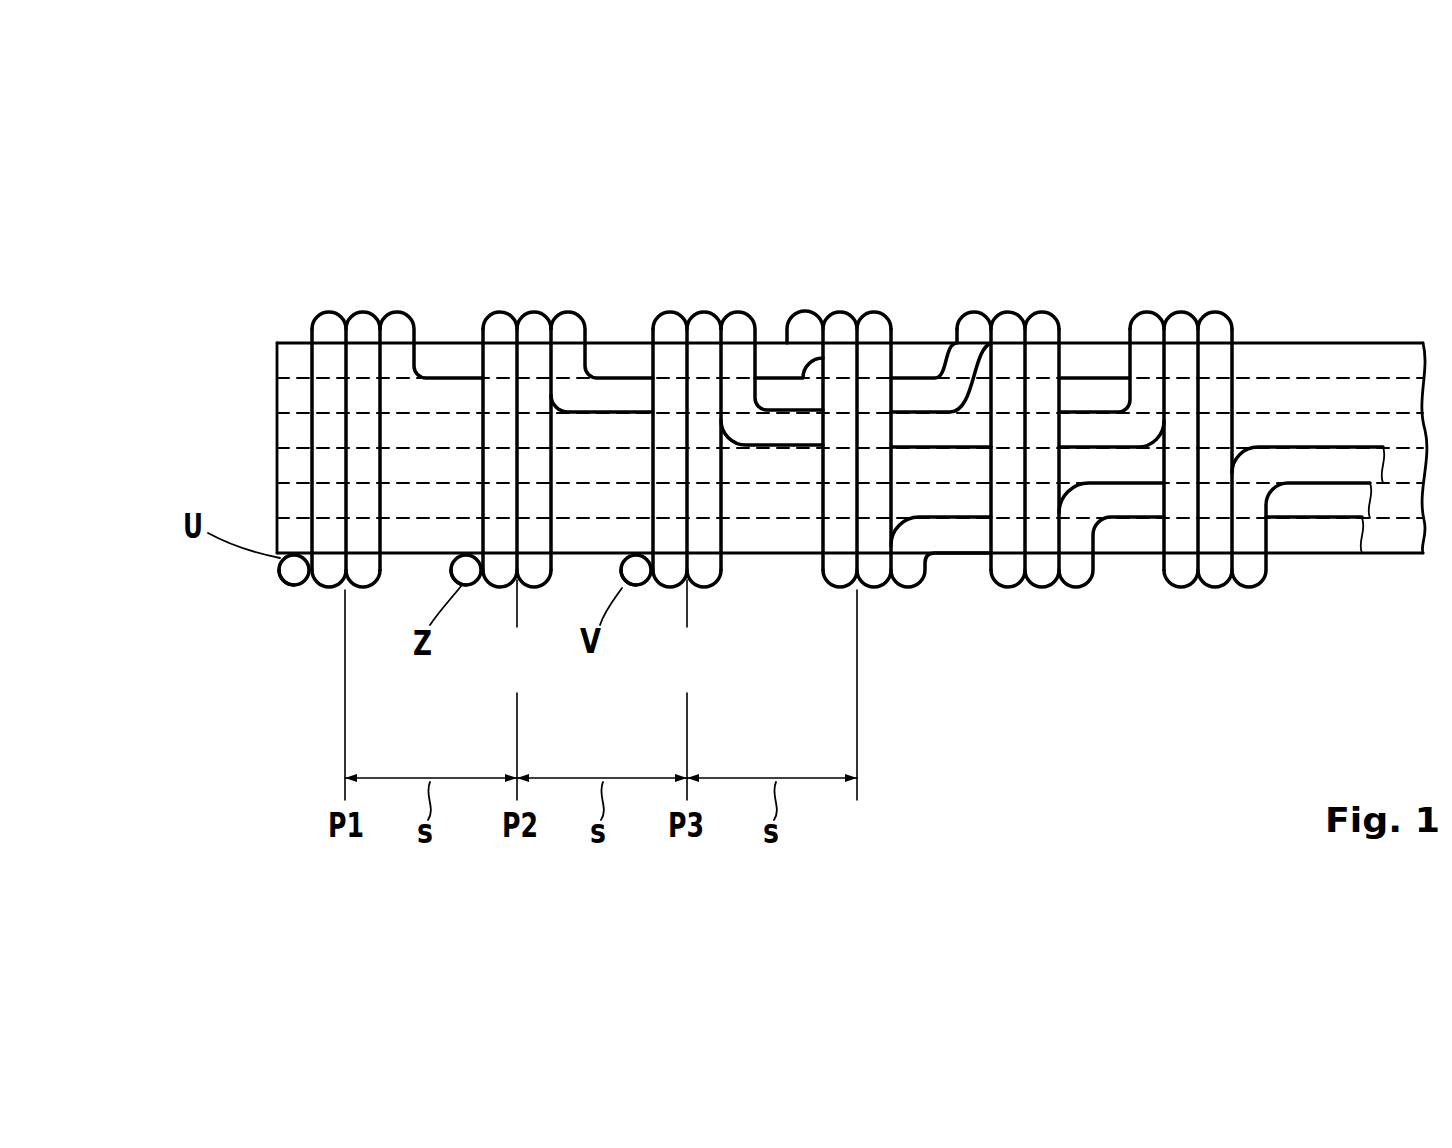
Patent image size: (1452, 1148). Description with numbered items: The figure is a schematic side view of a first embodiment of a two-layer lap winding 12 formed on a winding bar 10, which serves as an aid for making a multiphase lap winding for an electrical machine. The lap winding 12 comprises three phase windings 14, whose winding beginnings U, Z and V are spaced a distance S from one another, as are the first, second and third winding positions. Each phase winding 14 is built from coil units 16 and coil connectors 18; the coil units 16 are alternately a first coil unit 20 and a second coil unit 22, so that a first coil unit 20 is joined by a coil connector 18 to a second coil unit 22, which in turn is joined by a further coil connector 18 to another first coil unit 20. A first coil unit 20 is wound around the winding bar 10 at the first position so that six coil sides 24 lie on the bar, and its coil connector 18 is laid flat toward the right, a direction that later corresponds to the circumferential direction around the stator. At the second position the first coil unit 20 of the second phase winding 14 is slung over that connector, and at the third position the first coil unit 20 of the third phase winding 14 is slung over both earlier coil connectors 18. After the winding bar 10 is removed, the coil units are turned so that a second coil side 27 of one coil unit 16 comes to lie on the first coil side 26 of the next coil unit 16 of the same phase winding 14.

The winding bar 10 is at (1313, 317).
The lap winding 12 is at (922, 617).
The phase winding 14 is at (388, 240).
The coil unit 16 is at (300, 298).
The coil connector 18 is at (431, 345).
The first coil unit 20 is at (365, 603).
The second coil unit 22 is at (825, 602).
The coil side 24 is at (345, 316).
The first coil side 26 is at (360, 590).
The second coil side 27 is at (380, 316).